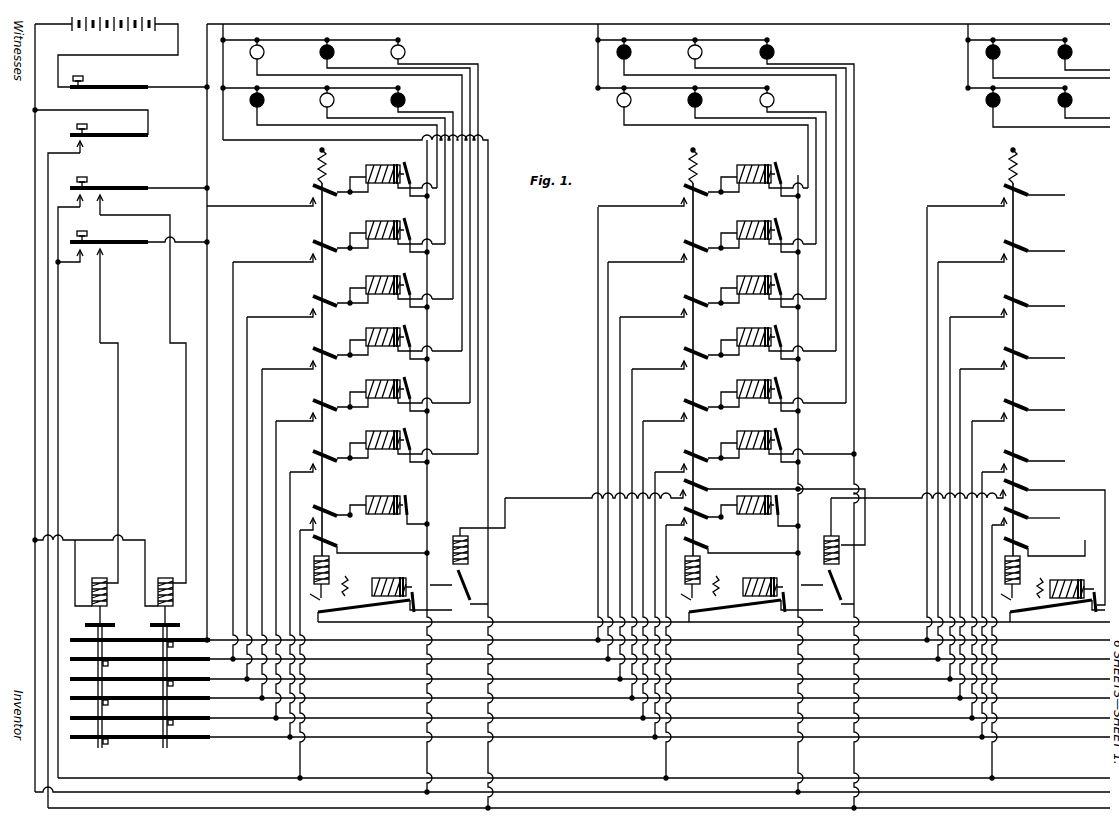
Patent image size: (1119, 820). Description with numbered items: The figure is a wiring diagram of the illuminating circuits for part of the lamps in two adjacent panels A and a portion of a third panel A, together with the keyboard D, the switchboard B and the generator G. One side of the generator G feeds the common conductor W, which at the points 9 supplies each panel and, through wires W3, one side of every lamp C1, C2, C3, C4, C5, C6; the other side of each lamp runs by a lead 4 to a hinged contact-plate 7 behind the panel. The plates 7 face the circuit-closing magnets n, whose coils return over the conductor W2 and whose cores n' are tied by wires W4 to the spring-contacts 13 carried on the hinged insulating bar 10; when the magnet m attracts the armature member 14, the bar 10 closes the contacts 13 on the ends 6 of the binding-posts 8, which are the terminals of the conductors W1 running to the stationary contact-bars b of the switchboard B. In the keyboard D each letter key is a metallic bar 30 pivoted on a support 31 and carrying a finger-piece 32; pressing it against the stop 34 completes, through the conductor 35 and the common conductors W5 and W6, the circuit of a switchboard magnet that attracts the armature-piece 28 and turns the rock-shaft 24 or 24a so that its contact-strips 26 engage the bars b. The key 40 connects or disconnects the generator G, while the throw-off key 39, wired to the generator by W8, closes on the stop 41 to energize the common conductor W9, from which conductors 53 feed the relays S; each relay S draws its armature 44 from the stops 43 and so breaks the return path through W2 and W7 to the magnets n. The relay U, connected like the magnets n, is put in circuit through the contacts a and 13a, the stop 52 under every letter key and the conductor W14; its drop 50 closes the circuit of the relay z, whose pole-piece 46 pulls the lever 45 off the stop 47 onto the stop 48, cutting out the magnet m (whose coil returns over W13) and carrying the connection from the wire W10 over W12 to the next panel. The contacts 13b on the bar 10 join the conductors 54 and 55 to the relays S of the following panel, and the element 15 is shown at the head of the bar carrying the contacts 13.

The common conductor W is at (658, 15).
The branch wire 9 is at (589, 324).
The generator G is at (106, 52).
The circuit opening and closing key 40 is at (109, 78).
The common conductor W5 is at (200, 293).
The return-conductor W7 is at (35, 492).
The conductor W8 is at (91, 113).
The throw-off key 39 is at (109, 126).
The fixed stop 41 is at (93, 148).
The conductor W9 is at (48, 336).
The key 30 is at (109, 205).
The finger-piece 32 is at (85, 193).
The fixed support 31 is at (157, 223).
The fixed stop 34 is at (111, 268).
The conductor 35 is at (118, 382).
The contact-stop 52 is at (68, 482).
The keyboard D is at (154, 161).
The conductor W14 is at (58, 463).
The conductor W6 is at (105, 562).
The circuit-closing magnet n is at (447, 387).
The core n' is at (539, 346).
The wire W4 is at (532, 301).
The hinged contact-plate 7 is at (602, 306).
The resistance 15 is at (669, 161).
The spring-contact 13 is at (681, 363).
The contact point 6 is at (607, 340).
The bar 10 is at (685, 248).
The conductor W1 is at (247, 590).
The binding-post 8 is at (613, 700).
The switchboard B is at (140, 705).
The stationary contact-bar b is at (170, 700).
The armature-piece 28 is at (123, 624).
The rock-shaft 24 is at (89, 692).
The rod 24a is at (170, 692).
The contact-strip 26 is at (138, 702).
The wire W3 is at (968, 72).
The panel A is at (779, 108).
The light-bulb C1 is at (590, 48).
The light-bulb C2 is at (705, 48).
The light-bulb C3 is at (634, 48).
The light-bulb C4 is at (591, 96).
The light-bulb C5 is at (696, 97).
The light-bulb C6 is at (625, 97).
The wire 4 is at (853, 323).
The wire W10 is at (488, 366).
The conductor 53 is at (680, 756).
The conductor W2 is at (630, 467).
The movable contact 13a is at (331, 509).
The contact 13b is at (855, 478).
The contact a is at (648, 638).
The relay U is at (554, 508).
The circuit-closing armature 50 is at (600, 511).
The armature 14 is at (686, 543).
The conductor W13 is at (712, 554).
The electromagnet m is at (678, 577).
The relay z is at (718, 580).
The circuit-closing lever 45 is at (705, 611).
The hinged pole-piece 46 is at (764, 595).
The stop 47 is at (658, 592).
The contact-stop 48 is at (702, 611).
The wire W12 is at (714, 611).
The stop 43 is at (626, 574).
The circuit-closing armature 44 is at (656, 592).
The relay S is at (648, 531).
The conductor 54 is at (755, 491).
The conductor 55 is at (906, 538).